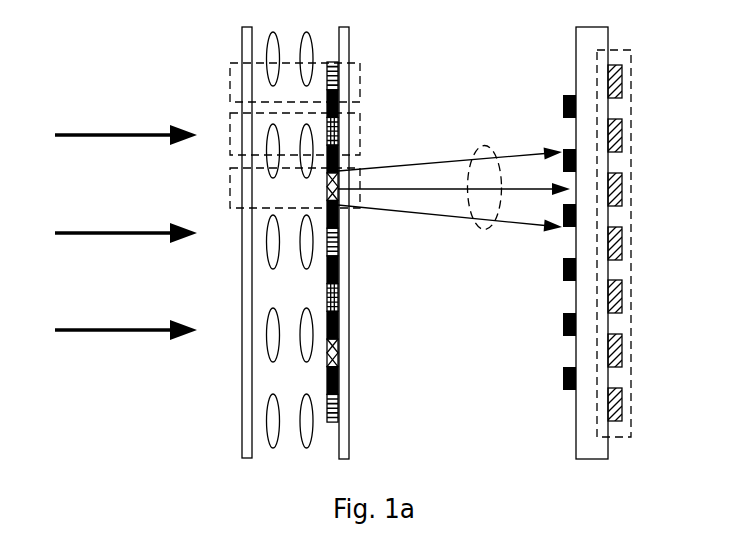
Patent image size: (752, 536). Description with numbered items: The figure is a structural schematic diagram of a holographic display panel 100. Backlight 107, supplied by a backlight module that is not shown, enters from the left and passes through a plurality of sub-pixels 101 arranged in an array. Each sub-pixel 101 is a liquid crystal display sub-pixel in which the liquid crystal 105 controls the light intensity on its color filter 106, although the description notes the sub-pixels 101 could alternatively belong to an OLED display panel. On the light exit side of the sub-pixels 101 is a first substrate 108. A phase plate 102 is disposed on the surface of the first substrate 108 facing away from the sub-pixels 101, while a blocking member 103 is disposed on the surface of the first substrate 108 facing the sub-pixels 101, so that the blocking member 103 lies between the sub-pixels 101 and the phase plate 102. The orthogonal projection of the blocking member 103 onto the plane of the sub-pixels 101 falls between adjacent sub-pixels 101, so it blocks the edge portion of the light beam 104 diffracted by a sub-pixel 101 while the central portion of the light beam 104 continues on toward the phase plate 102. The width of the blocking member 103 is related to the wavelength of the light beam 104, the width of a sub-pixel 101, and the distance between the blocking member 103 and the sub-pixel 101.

The holographic display panel 100 is at (155, 52).
The sub-pixels 101 is at (230, 184).
The phase plate 102 is at (631, 66).
The blocking member 103 is at (563, 100).
The light beam 104 is at (494, 228).
The liquid crystal 105 is at (268, 410).
The color filter 106 is at (338, 78).
The backlight 107 is at (103, 232).
The first substrate 108 is at (576, 407).